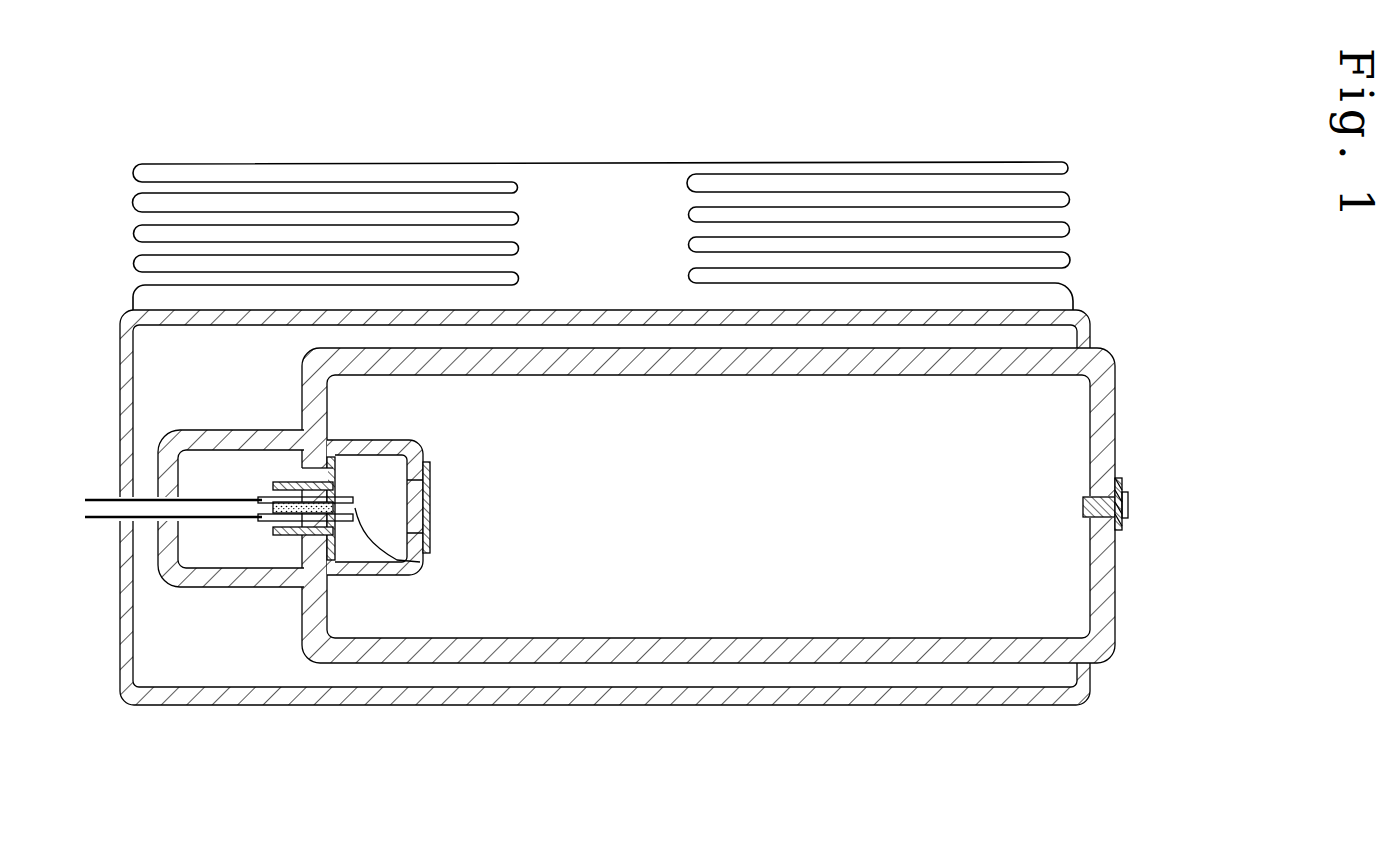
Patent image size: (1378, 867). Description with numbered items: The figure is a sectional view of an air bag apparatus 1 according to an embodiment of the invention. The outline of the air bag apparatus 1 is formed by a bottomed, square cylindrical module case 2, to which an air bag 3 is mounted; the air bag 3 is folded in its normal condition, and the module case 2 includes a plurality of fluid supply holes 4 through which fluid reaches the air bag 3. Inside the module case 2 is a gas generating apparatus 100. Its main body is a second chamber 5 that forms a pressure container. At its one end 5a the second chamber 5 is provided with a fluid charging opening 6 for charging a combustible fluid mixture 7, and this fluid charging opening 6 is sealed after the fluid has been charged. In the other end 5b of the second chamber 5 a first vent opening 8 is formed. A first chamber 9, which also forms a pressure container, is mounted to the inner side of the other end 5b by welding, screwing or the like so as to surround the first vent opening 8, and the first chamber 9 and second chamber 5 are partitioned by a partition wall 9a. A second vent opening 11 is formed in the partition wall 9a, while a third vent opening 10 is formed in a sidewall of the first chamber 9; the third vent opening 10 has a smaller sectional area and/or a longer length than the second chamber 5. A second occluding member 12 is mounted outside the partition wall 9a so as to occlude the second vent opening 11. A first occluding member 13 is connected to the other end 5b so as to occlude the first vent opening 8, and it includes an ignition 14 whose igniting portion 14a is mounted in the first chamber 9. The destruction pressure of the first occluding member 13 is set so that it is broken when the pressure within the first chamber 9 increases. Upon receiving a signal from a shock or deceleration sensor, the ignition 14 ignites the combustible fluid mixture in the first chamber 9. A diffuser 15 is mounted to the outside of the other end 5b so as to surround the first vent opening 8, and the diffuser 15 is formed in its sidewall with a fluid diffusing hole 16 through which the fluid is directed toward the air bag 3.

The air bag apparatus 1 is at (843, 150).
The module case 2 is at (818, 707).
The air bag 3 is at (206, 166).
The fluid supply holes 4 is at (601, 313).
The second chamber 5 is at (805, 632).
The one end of the second chamber 5a is at (1117, 405).
The other end of the second chamber 5b is at (355, 392).
The fluid charging opening 6 is at (1095, 497).
The combustible fluid mixture 7 is at (657, 602).
The first vent opening 8 is at (313, 560).
The first chamber 9 is at (397, 543).
The partition wall 9a is at (413, 447).
The third vent opening 10 is at (370, 447).
The second vent opening 11 is at (418, 507).
The second occluding member 12 is at (430, 475).
The first occluding member 13 is at (283, 540).
The ignition 14 is at (262, 519).
The igniting portion 14a is at (407, 567).
The diffuser 15 is at (160, 474).
The fluid diffusing hole 16 is at (230, 437).
The gas generating apparatus 100 is at (532, 650).